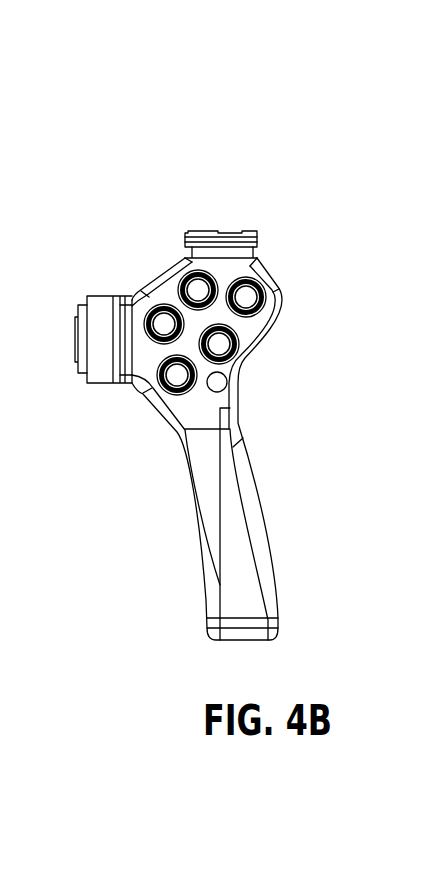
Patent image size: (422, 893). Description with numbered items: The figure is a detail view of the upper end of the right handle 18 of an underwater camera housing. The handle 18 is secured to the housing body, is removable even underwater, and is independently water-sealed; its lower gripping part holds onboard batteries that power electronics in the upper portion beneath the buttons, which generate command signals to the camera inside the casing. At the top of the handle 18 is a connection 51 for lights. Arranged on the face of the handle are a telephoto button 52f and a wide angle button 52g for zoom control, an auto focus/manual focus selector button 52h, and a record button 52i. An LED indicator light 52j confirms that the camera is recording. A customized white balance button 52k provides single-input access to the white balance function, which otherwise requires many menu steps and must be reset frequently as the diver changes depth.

The right handle 18 is at (258, 472).
The connection for lights 51 is at (223, 257).
The telephoto button 52f is at (162, 322).
The wide angle button 52g is at (173, 379).
The auto focus/manual focus selector button 52h is at (196, 290).
The record button 52i is at (222, 347).
The LED indicator light 52j is at (214, 382).
The white balance button 52k is at (248, 296).